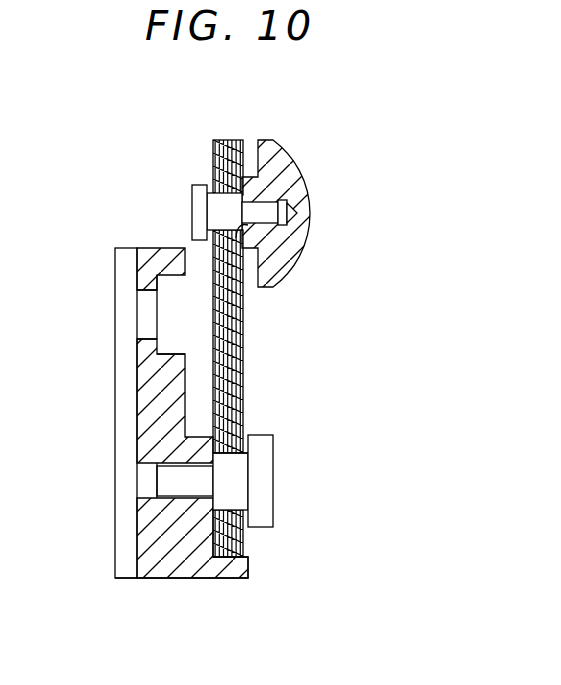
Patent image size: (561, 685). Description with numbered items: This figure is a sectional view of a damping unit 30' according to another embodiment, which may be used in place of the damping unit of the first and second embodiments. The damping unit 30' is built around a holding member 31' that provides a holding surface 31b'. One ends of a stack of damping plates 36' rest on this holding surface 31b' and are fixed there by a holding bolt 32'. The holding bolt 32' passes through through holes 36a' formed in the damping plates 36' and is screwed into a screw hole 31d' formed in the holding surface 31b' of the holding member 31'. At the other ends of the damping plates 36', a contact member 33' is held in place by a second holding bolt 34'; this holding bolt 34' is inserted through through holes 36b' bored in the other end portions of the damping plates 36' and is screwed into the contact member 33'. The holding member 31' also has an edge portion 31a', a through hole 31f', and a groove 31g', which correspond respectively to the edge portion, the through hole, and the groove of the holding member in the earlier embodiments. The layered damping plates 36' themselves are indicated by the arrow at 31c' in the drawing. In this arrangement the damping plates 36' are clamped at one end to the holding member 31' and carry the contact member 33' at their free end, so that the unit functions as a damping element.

The damping unit 30' is at (485, 325).
The holding member 31' is at (153, 400).
The edge portion 31a' is at (244, 595).
The holding surface 31b' is at (274, 428).
The belt member 31c' is at (278, 296).
The screw hole 31d' is at (123, 480).
The through hole 31f' is at (109, 314).
The groove 31g' is at (87, 413).
The holding bolt 32' is at (295, 481).
The contact member 33' is at (304, 206).
The holding bolt 34' is at (123, 201).
The damping plates 36' is at (295, 202).
The through holes 36a' is at (283, 537).
The through holes 36b' is at (295, 259).